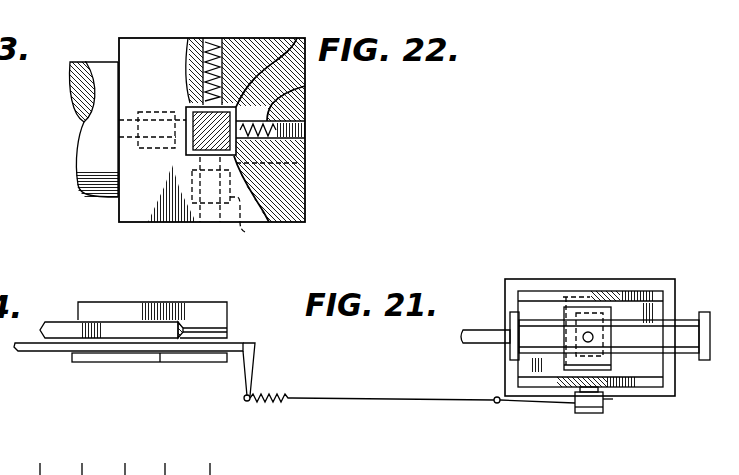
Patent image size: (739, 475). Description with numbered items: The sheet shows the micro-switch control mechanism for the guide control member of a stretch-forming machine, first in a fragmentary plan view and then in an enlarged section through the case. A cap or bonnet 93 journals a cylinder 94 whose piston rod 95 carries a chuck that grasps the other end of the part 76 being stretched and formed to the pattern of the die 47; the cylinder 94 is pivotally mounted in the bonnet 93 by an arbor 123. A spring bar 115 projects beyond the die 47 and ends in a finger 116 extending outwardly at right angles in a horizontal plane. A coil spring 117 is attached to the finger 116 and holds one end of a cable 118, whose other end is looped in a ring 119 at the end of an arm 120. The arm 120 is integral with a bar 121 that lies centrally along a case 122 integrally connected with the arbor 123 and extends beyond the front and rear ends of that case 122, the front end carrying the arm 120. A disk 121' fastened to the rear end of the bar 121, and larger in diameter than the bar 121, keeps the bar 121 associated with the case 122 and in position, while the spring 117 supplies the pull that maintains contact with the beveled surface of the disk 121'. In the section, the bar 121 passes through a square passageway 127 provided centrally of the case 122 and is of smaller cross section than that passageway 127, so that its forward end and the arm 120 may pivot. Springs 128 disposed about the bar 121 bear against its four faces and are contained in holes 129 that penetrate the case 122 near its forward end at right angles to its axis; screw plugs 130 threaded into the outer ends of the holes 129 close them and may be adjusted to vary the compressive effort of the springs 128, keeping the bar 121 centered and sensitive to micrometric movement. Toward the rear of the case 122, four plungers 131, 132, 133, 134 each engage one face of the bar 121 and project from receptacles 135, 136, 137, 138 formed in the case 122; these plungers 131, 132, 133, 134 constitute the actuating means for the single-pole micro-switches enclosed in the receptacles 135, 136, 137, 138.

In FIG. 21, the die 47 is at (108, 306).
In FIG. 21, the part 76 is at (58, 322).
In FIG. 21, the cap or bonnet 93 is at (558, 325).
In FIG. 21, the cylinder 94 is at (690, 321).
In FIG. 21, the piston rod 95 is at (471, 331).
In FIG. 21, the spring bar 115 is at (244, 343).
In FIG. 21, the finger 116 is at (256, 369).
In FIG. 21, the coil spring 117 is at (271, 402).
In FIG. 21, the cable 118 is at (401, 398).
In FIG. 21, the ring 119 is at (497, 403).
In FIG. 21, the arm 120 is at (530, 403).
In FIG. 22, the bar 121 is at (176, 181).
In FIG. 21, the bar 121 is at (585, 418).
In FIG. 21, the disk 121' is at (632, 408).
In FIG. 22, the case 122 is at (300, 207).
In FIG. 21, the case 122 is at (598, 413).
In FIG. 22, the arbor 123 is at (92, 147).
In FIG. 21, the arbor 123 is at (600, 389).
In FIG. 22, the square passageway 127 is at (190, 96).
In FIG. 22, the springs 128 is at (190, 64).
In FIG. 22, the holes 129 is at (190, 78).
In FIG. 22, the screw plugs 130 is at (215, 42).
In FIG. 22, the plunger 131 is at (300, 33).
In FIG. 22, the plunger 132 is at (288, 178).
In FIG. 22, the plunger 133 is at (305, 84).
In FIG. 22, the plunger 134 is at (185, 106).
In FIG. 22, the receptacle 135 is at (250, 46).
In FIG. 22, the receptacle 136 is at (240, 222).
In FIG. 22, the receptacle 137 is at (300, 163).
In FIG. 22, the receptacle 138 is at (140, 120).